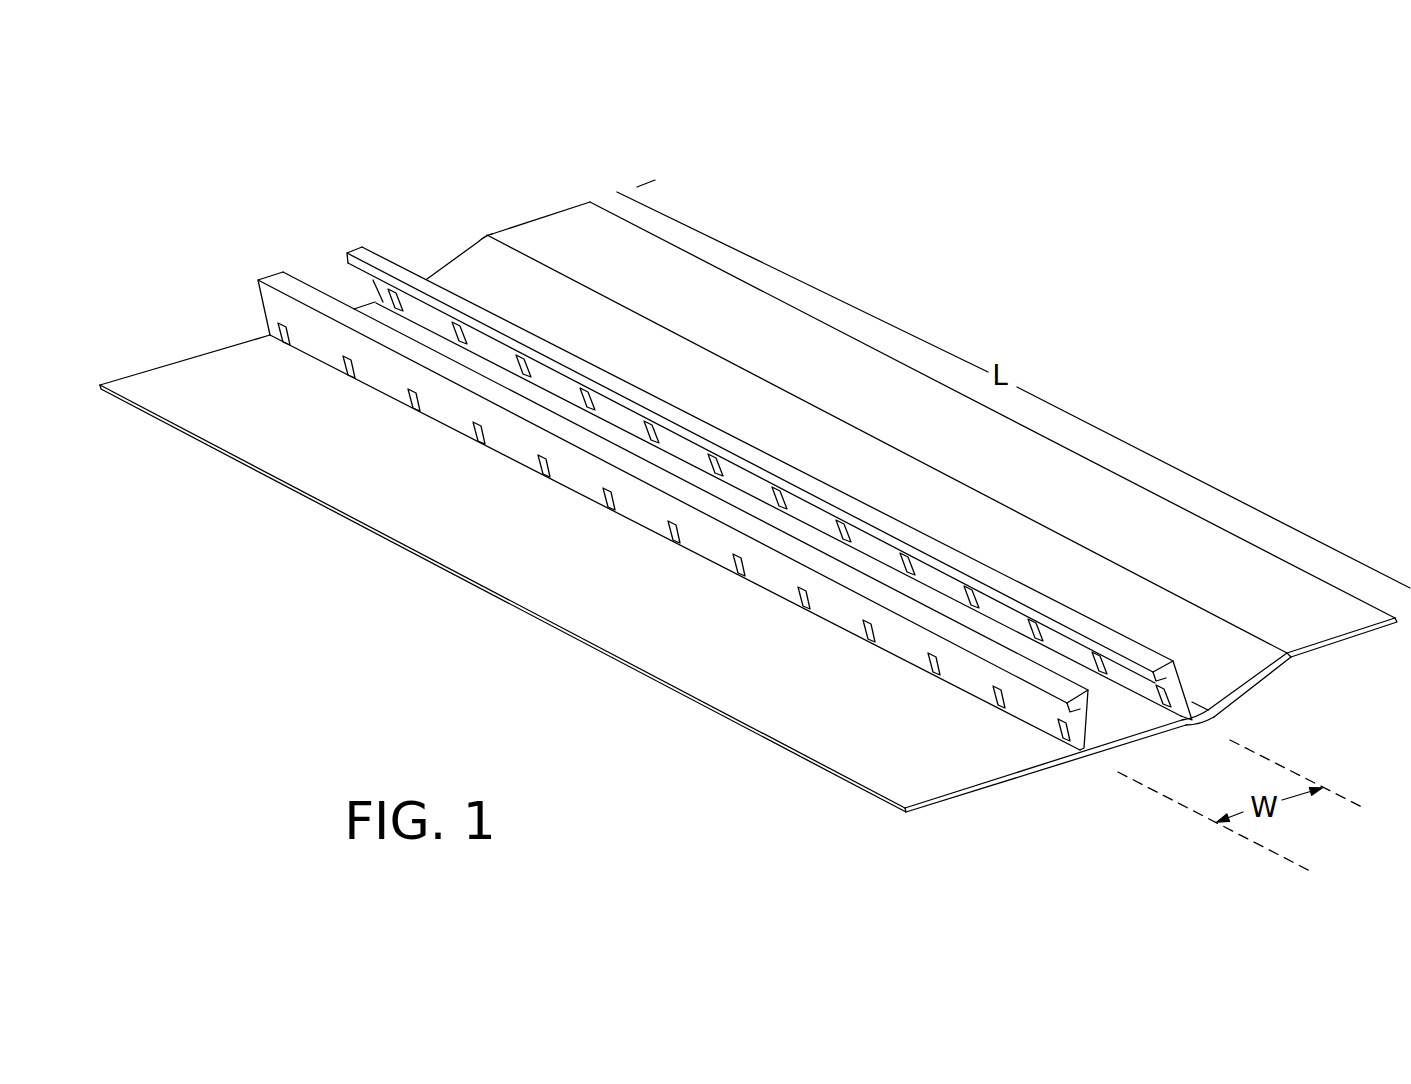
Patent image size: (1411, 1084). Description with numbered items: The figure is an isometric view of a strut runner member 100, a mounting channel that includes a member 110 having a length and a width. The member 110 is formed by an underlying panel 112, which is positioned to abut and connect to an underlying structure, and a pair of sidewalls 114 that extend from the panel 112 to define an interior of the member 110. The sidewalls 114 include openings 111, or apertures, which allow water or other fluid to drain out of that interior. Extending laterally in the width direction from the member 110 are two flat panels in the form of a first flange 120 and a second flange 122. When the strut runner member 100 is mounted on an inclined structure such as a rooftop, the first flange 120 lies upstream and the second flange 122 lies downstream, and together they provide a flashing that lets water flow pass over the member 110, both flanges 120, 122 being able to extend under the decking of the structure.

The strut runner member 100 is at (1250, 494).
The member 110 is at (1188, 720).
The openings 111 is at (410, 410).
The underlying panel 112 is at (1128, 718).
The sidewalls 114 is at (372, 247).
The first flange 120 is at (870, 750).
The second flange 122 is at (643, 280).